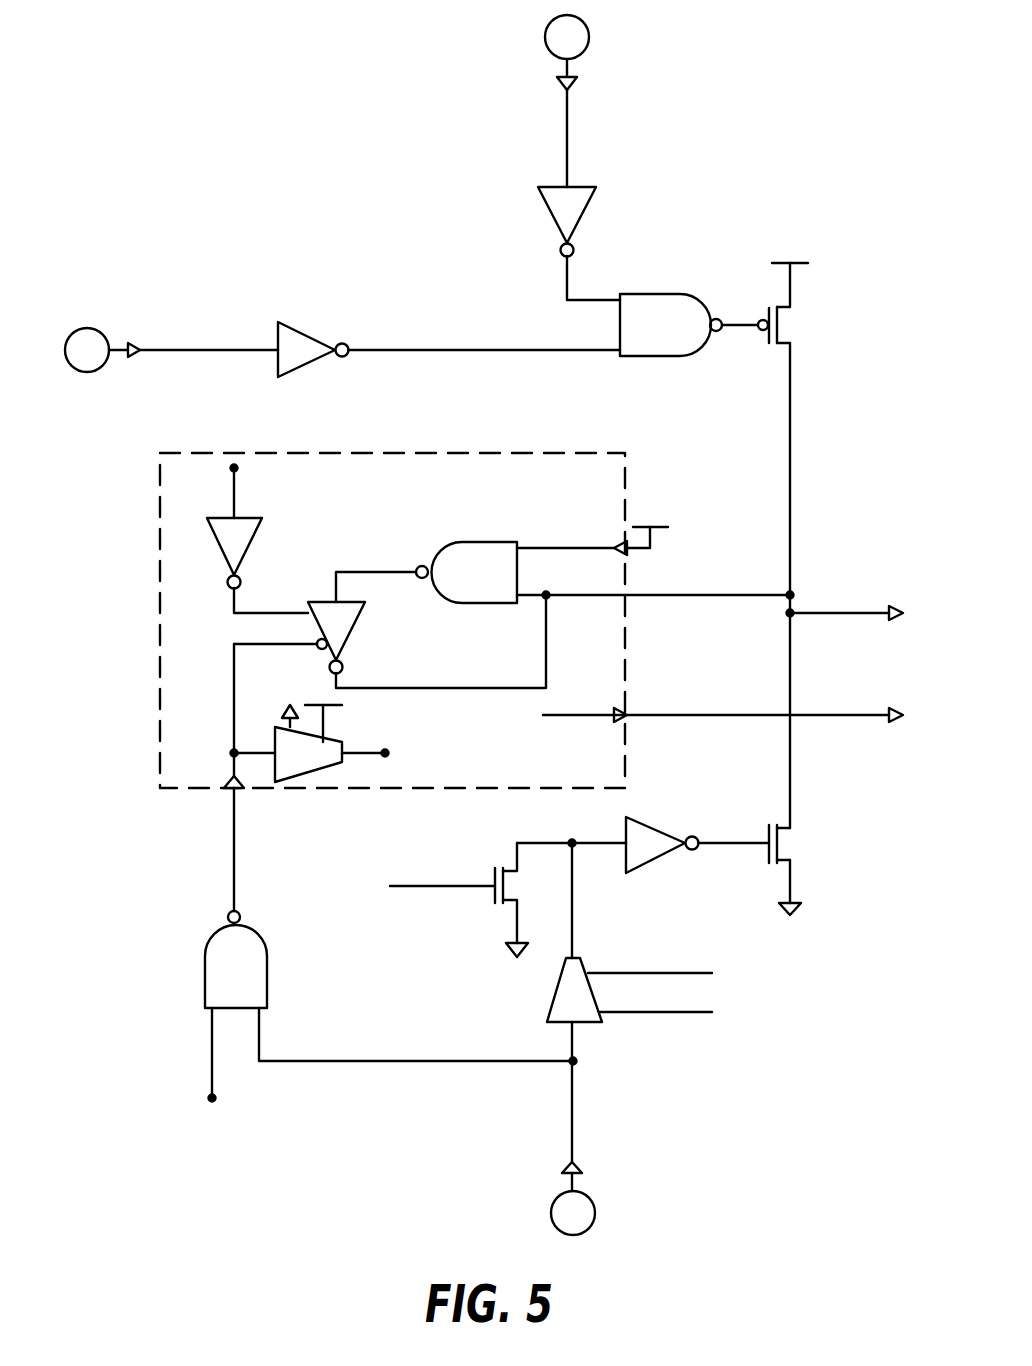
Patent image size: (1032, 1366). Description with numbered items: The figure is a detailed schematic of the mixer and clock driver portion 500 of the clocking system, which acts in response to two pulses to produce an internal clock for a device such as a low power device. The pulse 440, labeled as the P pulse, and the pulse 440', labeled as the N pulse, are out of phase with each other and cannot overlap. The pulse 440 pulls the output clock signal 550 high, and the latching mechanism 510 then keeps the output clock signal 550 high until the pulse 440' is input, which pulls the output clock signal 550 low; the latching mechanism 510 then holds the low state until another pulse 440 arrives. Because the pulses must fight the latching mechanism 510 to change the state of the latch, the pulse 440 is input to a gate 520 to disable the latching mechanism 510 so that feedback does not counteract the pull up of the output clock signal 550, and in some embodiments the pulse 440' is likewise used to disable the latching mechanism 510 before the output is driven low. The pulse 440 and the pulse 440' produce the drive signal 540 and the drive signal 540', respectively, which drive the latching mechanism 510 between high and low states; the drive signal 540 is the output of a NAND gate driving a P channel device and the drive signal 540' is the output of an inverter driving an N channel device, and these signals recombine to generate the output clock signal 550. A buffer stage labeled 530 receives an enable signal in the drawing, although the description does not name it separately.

The mixer and clock driver portion 500 is at (158, 50).
The pulse 440 is at (582, 157).
The EnClkDrvF input buffer 530 is at (195, 355).
The latching mechanism 510 is at (386, 453).
The drive signal 540 is at (249, 527).
The output clock signal 550 is at (858, 619).
The drive signal 540' is at (267, 849).
The gate 520 is at (203, 984).
The pulse 440' is at (592, 1128).